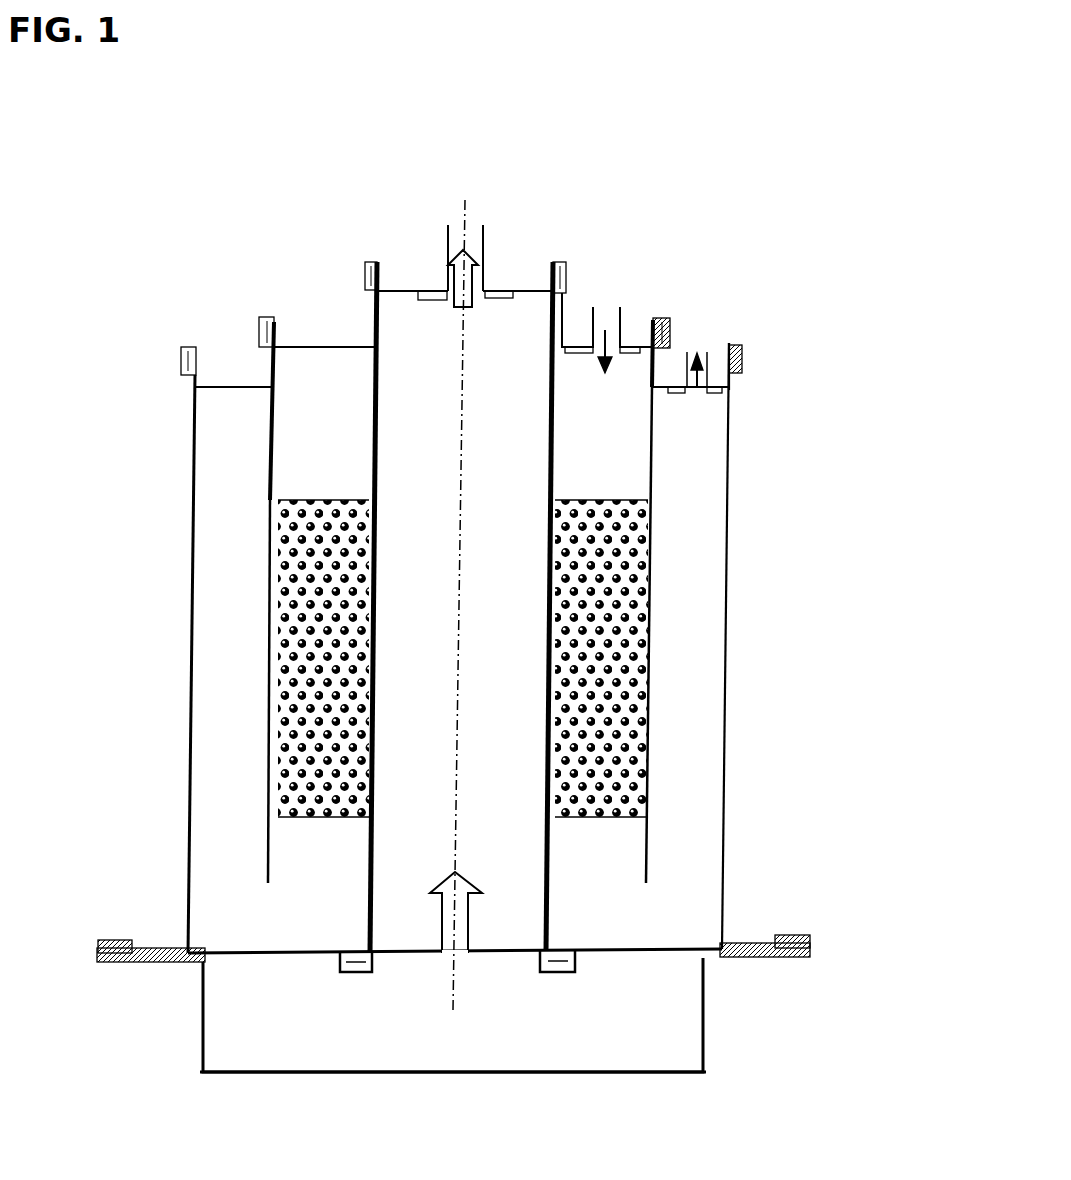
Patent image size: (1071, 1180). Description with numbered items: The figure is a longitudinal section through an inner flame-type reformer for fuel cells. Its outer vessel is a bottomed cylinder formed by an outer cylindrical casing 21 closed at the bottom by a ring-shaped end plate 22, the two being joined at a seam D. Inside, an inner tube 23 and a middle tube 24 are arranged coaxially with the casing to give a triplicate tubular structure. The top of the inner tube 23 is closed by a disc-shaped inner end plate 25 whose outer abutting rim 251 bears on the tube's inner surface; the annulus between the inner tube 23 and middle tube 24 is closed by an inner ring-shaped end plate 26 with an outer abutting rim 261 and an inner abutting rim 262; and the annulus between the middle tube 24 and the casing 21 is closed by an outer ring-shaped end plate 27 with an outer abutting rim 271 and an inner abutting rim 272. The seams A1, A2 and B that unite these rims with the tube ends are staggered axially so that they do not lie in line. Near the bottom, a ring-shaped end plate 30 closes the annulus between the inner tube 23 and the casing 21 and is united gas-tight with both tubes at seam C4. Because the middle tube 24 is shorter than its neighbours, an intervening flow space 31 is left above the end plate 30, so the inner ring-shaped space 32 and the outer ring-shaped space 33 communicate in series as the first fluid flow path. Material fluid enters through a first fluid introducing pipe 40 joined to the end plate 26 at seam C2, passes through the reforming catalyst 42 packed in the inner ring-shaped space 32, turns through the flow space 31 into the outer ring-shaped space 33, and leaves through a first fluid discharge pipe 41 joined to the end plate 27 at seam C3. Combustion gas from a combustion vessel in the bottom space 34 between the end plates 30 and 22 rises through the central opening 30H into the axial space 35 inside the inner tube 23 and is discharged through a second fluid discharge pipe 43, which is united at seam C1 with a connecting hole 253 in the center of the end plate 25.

The outer cylindrical casing 21 is at (190, 505).
The end plate 22 is at (703, 990).
The inner tube 23 is at (372, 420).
The middle tube 24 is at (271, 405).
The inner end plate 25 is at (528, 293).
The inner ring-shaped end plate 26 is at (312, 350).
The outer ring-shaped end plate 27 is at (690, 411).
The end plate 30 is at (282, 955).
The central opening 30H is at (480, 955).
The intervening flow space 31 is at (285, 910).
The inner ring-shaped space 32 is at (348, 845).
The outer ring-shaped space 33 is at (216, 728).
The bottom space 34 is at (448, 1045).
The axial space 35 is at (501, 685).
The first fluid introducing pipe 40 is at (620, 308).
The first fluid discharge pipe 41 is at (700, 350).
The reforming catalyst 42 is at (276, 588).
The second fluid discharge pipe 43 is at (486, 231).
The outer abutting rim 251 is at (386, 270).
The connecting hole 253 is at (470, 315).
The outer abutting rim 261 is at (280, 337).
The inner abutting rim 262 is at (368, 321).
The outer abutting rim 271 is at (206, 350).
The inner abutting rim 272 is at (260, 356).
The seam A1 is at (562, 265).
The seam A2 is at (662, 314).
The seam B is at (742, 355).
The seam C1 is at (503, 291).
The seam C2 is at (620, 405).
The seam C3 is at (729, 412).
The seam C4 is at (562, 950).
The seam D is at (790, 935).